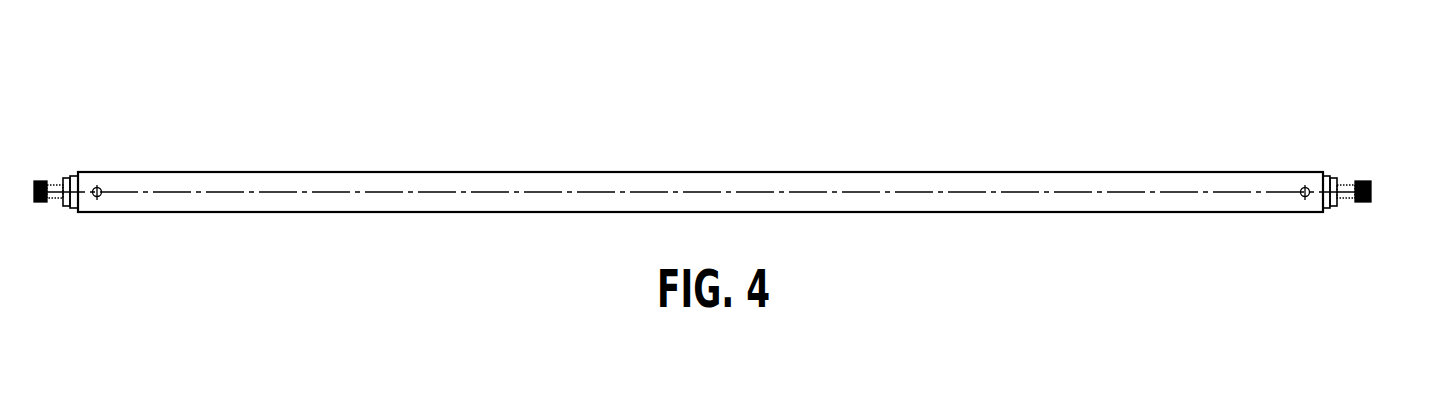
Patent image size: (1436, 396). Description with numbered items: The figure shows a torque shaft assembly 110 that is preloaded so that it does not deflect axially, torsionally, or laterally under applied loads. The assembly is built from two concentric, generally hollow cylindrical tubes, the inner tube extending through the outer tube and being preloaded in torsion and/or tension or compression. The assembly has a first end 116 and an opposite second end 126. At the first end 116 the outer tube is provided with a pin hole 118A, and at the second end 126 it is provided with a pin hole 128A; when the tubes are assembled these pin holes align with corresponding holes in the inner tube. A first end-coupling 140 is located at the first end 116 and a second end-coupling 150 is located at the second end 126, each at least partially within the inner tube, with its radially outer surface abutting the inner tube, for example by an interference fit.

The torque shaft assembly 110 is at (541, 150).
The second end 126 is at (194, 126).
The first end 116 is at (1241, 127).
The pin hole 128A is at (97, 187).
The pin hole 118A is at (1305, 187).
The second end-coupling 150 is at (56, 196).
The first end-coupling 140 is at (1345, 200).